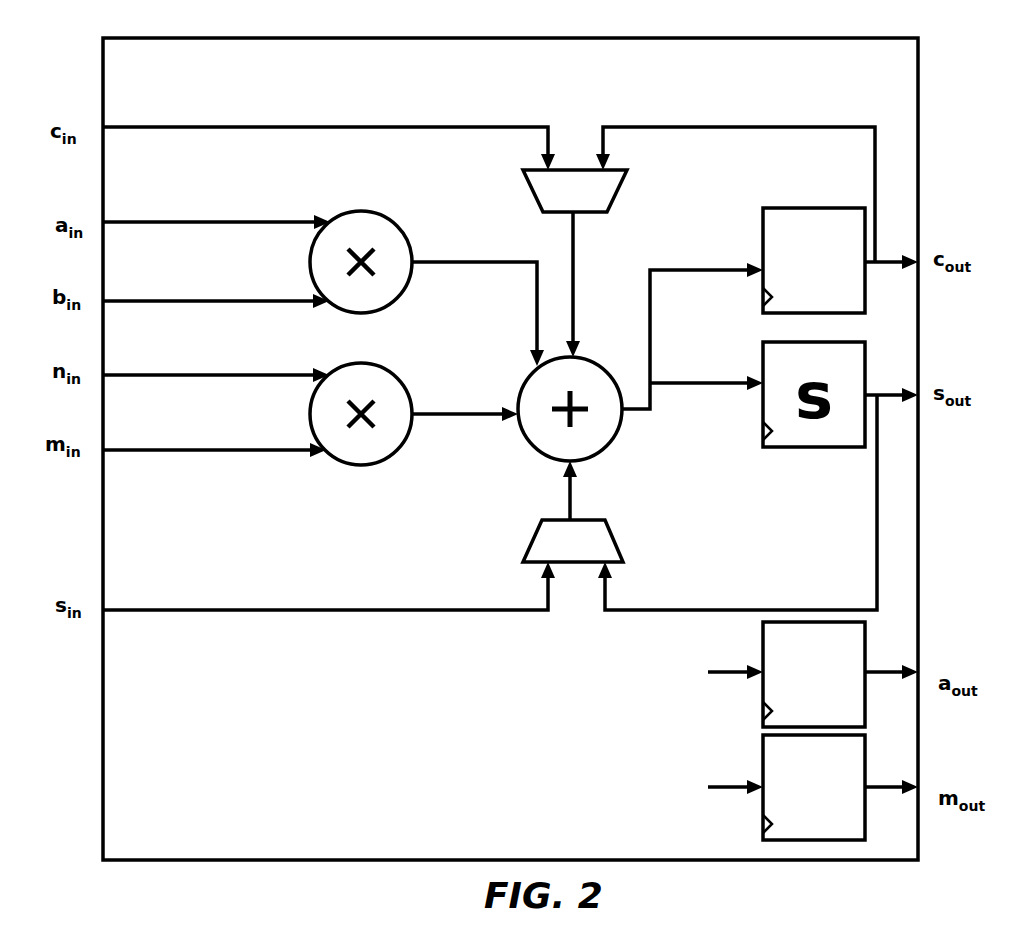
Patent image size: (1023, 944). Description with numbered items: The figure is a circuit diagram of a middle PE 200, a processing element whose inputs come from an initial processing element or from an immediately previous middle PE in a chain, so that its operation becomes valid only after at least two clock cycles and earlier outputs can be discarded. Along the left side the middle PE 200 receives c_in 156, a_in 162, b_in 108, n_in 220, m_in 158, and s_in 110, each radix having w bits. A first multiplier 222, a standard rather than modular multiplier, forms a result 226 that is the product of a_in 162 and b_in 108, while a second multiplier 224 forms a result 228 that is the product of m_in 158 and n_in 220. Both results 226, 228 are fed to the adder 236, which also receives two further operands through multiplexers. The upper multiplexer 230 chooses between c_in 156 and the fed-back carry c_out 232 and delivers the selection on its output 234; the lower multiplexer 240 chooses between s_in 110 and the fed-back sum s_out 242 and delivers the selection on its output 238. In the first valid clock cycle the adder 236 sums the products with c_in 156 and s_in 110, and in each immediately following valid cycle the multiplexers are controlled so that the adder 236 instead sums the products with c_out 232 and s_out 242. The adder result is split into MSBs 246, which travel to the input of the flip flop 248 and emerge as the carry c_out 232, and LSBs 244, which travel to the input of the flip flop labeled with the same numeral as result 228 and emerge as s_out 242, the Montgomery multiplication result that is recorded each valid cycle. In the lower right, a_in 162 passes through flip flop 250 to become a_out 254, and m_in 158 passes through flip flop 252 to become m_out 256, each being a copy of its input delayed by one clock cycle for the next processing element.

The middle PE 200 is at (700, 38).
The c_in 156 is at (118, 128).
The a_in 162 is at (118, 223).
The b_in 108 is at (178, 302).
The n_in 220 is at (188, 376).
The m_in 158 is at (128, 451).
The s_in 110 is at (140, 611).
The multiplier 222 is at (355, 212).
The multiplier 224 is at (357, 364).
The result 226 is at (422, 263).
The result 228 is at (505, 425).
The multiplexer 230 is at (620, 172).
The c_out 232 is at (768, 128).
The multiplexer output 234 is at (580, 290).
The adder 236 is at (533, 445).
The multiplexer output 238 is at (560, 480).
The multiplexer 240 is at (625, 548).
The s_out 242 is at (880, 550).
The LSBs 244 is at (712, 388).
The MSBs 246 is at (690, 268).
The flip flop 248 is at (770, 208).
The flip flop 250 is at (868, 640).
The flip flop 252 is at (868, 755).
The a_out 254 is at (885, 672).
The m_out 256 is at (885, 787).